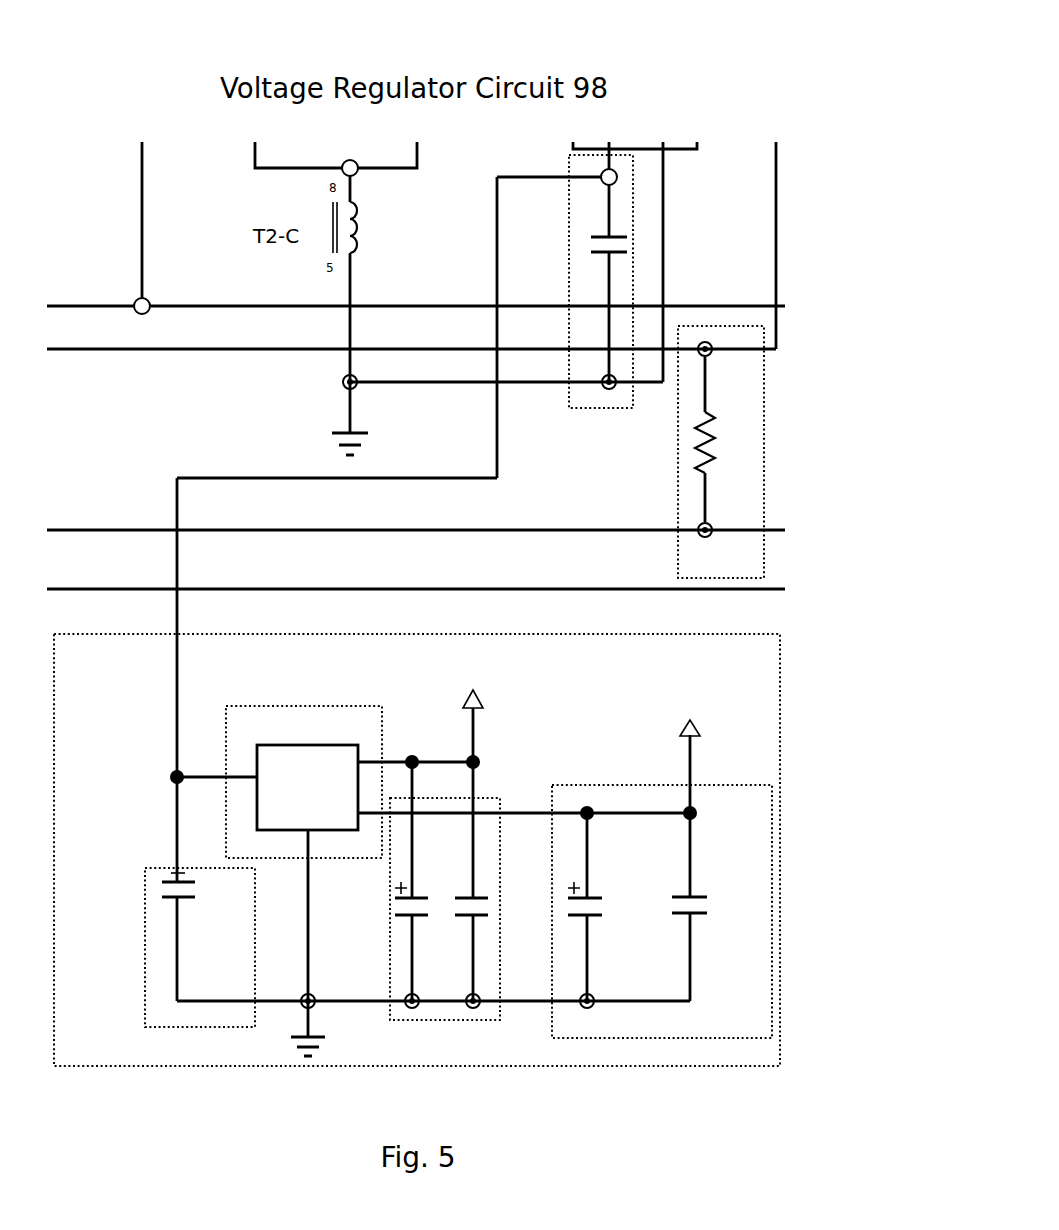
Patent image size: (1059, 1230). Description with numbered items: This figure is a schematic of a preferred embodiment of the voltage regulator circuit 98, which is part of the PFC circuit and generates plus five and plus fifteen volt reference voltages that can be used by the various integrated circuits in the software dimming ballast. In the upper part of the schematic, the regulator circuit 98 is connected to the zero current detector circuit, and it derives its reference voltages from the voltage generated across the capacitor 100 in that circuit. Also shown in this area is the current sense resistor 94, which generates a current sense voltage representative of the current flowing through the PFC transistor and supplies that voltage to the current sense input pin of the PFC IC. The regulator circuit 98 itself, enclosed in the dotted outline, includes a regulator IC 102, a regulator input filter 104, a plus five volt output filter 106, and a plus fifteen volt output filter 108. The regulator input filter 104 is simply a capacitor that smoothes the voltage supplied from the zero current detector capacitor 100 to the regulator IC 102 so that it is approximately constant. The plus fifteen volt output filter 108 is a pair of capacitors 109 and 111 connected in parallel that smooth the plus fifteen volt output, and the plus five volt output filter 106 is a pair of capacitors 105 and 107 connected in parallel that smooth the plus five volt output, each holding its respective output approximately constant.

The current sense resistor 94 is at (765, 428).
The voltage regulator circuit 98 is at (780, 687).
The capacitor 100 is at (633, 233).
The regulator IC 102 is at (298, 706).
The regulator input filter 104 is at (165, 1027).
The capacitor 105 is at (620, 973).
The +5 volt output filter 106 is at (740, 785).
The capacitor 107 is at (712, 938).
The +15 volt output filter 108 is at (480, 797).
The capacitor 109 is at (428, 937).
The capacitor 111 is at (493, 873).